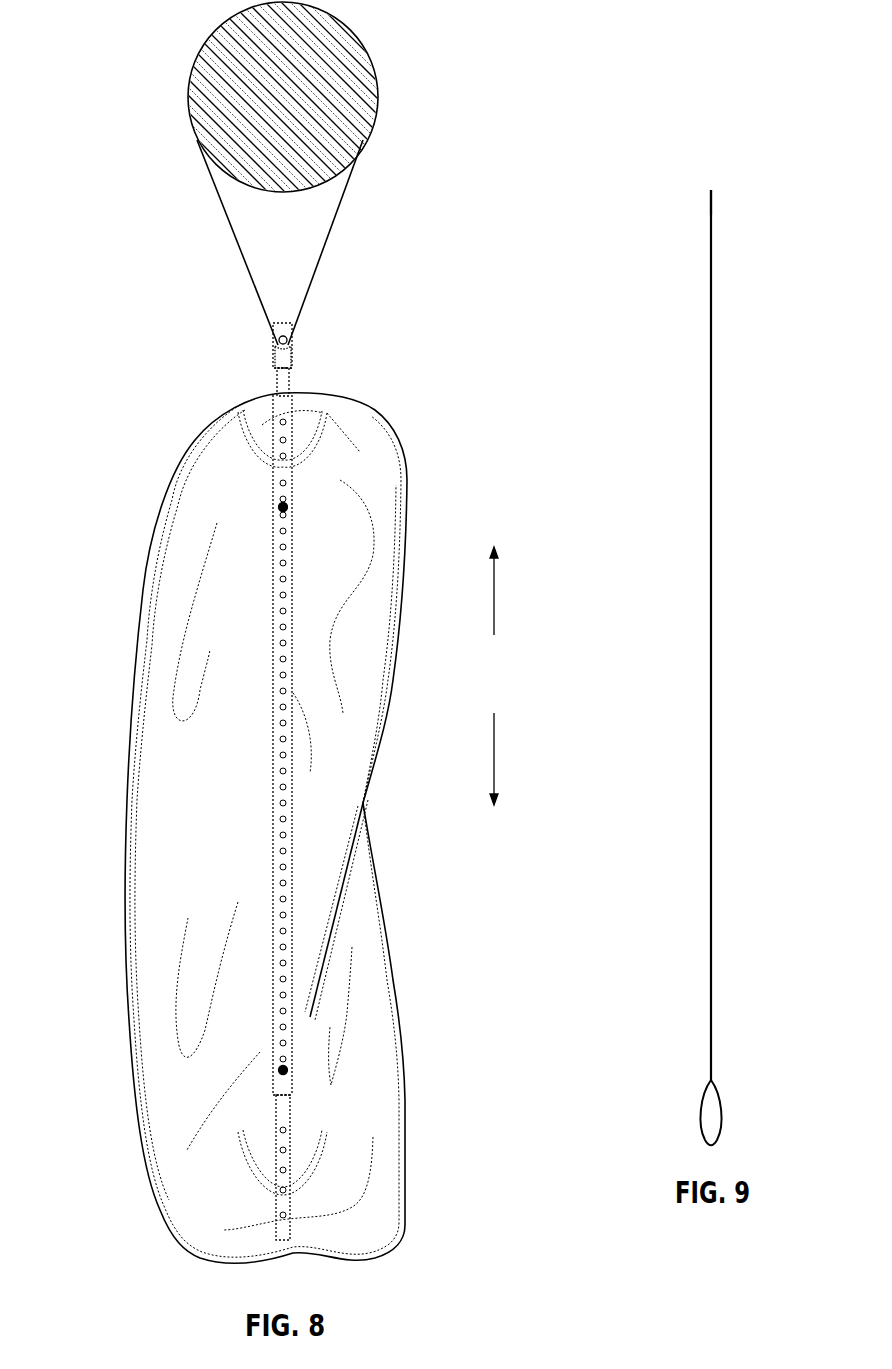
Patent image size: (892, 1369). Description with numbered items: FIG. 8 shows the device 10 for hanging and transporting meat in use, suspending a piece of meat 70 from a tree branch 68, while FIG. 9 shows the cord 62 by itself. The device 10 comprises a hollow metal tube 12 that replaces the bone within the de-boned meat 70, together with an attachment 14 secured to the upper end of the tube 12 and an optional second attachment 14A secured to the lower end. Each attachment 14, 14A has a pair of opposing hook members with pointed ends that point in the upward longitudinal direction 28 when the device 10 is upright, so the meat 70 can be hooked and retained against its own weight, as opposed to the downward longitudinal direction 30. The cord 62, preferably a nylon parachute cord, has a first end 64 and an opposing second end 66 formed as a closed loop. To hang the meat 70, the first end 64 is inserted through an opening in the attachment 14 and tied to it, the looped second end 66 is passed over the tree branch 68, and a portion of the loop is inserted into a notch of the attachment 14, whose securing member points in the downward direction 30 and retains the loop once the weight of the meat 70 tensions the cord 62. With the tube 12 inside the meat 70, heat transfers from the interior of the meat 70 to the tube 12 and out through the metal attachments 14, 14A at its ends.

In FIG. 8, the device 10 is at (145, 316).
In FIG. 8, the tube 12 is at (293, 605).
In FIG. 8, the attachment 14 is at (290, 407).
In FIG. 8, the second attachment 14A is at (277, 1207).
In FIG. 8, the upward direction 28 is at (494, 590).
In FIG. 8, the downward direction 30 is at (494, 762).
In FIG. 8, the cord 62 is at (333, 237).
In FIG. 9, the cord 62 is at (713, 595).
In FIG. 9, the first end 64 is at (715, 186).
In FIG. 9, the second end 66 is at (735, 1120).
In FIG. 8, the tree branch 68 is at (247, 80).
In FIG. 8, the meat 70 is at (168, 762).